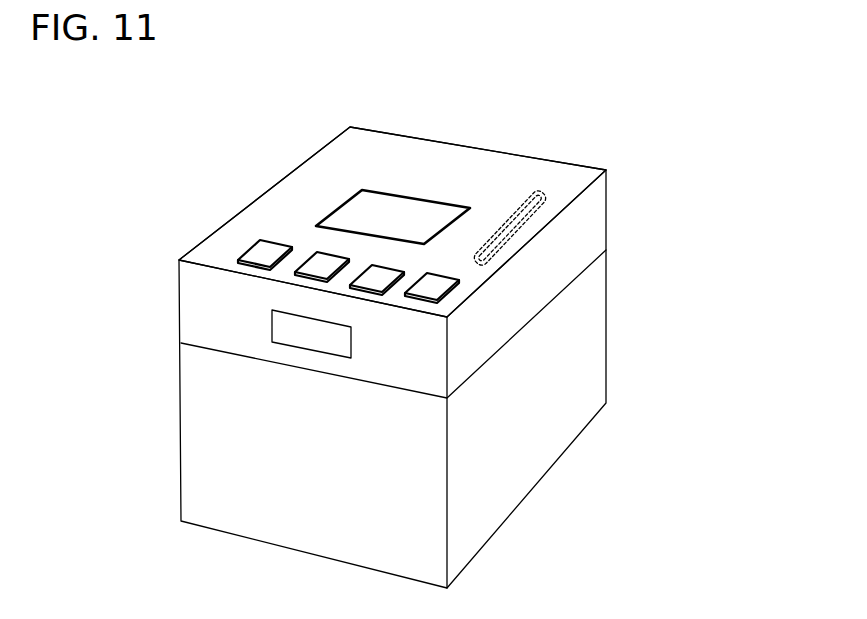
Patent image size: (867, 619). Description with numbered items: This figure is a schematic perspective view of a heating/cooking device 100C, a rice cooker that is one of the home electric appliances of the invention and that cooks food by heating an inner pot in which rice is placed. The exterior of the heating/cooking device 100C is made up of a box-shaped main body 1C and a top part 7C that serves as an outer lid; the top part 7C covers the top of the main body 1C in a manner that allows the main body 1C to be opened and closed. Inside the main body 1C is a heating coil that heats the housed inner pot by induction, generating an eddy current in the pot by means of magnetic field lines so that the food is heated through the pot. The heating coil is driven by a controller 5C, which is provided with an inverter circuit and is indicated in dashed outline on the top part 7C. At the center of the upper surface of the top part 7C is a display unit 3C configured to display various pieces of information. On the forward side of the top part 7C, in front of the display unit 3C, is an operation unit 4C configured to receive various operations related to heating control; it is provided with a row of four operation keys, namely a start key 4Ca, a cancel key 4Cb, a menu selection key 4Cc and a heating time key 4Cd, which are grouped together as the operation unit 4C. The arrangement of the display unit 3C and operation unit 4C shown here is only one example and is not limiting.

The heating/cooking device 100C is at (176, 178).
The main body 1C is at (600, 289).
The top part 7C is at (383, 158).
The display unit 3C is at (430, 215).
The controller 5C is at (538, 197).
The operation unit 4C is at (706, 370).
The start key 4Ca is at (437, 292).
The cancel key 4Cb is at (385, 292).
The menu selection key 4Cc is at (325, 282).
The heating time key 4Cd is at (268, 265).